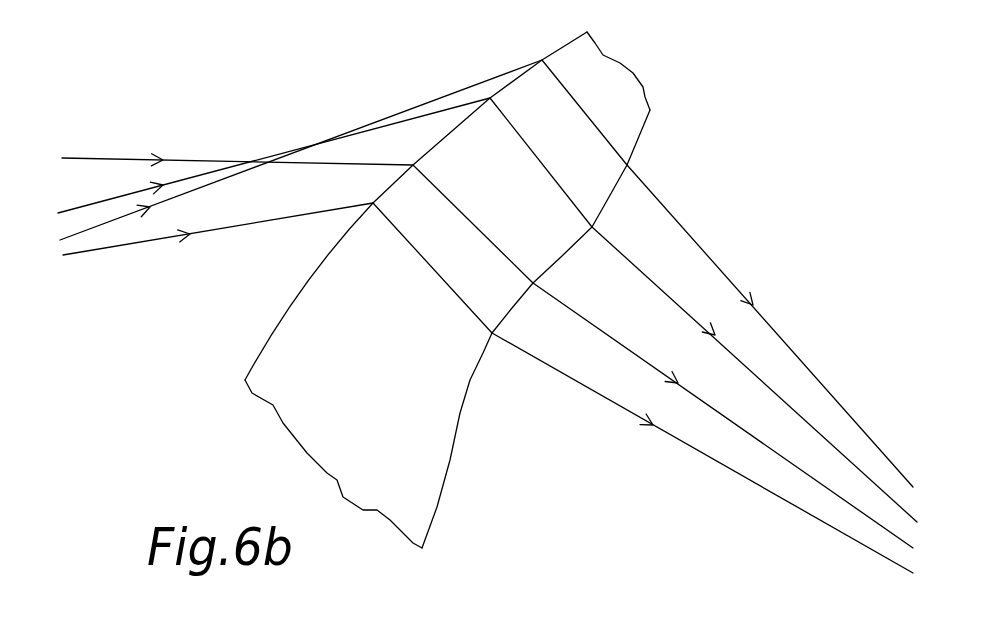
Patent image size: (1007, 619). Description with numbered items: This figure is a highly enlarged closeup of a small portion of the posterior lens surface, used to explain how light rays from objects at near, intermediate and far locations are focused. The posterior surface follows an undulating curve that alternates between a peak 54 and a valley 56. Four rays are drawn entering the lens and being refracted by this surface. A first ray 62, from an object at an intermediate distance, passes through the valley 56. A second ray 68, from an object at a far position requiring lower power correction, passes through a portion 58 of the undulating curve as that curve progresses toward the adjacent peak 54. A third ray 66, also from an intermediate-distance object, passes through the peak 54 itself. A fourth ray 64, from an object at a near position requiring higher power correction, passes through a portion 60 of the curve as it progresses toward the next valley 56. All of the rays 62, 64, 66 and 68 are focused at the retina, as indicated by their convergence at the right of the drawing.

The peak 54 is at (592, 229).
The valley 56 is at (650, 111).
The portion of the undulating curve 58 is at (533, 283).
The portion of the undulating curve 60 is at (627, 165).
The first ray 62 is at (86, 257).
The fourth ray 64 is at (158, 202).
The third ray 66 is at (113, 197).
The second ray 68 is at (185, 157).